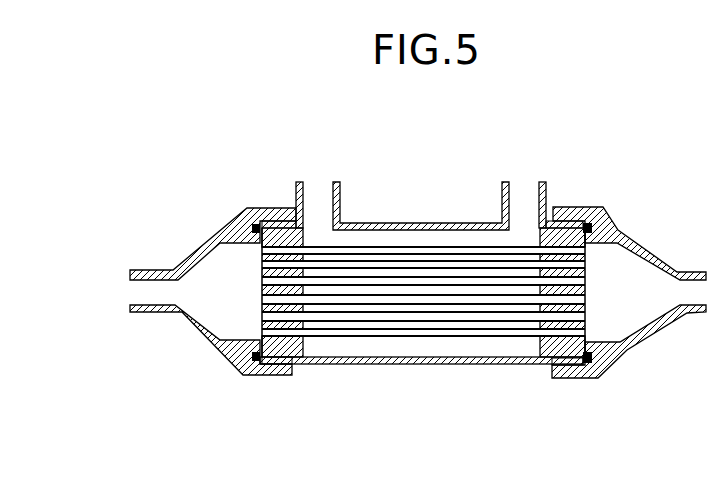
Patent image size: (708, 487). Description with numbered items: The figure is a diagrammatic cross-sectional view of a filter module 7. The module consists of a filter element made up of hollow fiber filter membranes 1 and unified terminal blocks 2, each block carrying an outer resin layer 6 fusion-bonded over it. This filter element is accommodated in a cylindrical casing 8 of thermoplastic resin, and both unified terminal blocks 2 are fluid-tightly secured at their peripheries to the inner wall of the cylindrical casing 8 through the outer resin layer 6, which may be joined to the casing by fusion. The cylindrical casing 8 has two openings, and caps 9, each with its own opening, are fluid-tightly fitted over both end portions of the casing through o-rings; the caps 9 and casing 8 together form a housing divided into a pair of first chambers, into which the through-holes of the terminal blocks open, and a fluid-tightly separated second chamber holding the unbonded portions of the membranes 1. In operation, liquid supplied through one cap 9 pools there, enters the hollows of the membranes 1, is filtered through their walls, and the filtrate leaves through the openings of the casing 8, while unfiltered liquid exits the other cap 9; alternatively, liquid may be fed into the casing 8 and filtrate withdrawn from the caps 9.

The hollow fiber filter membranes 1 is at (436, 253).
The unified terminal blocks 2 is at (553, 330).
The outer resin layer 6 is at (567, 378).
The filter module 7 is at (412, 374).
The cylindrical casing 8 is at (478, 364).
The caps 9 is at (198, 332).